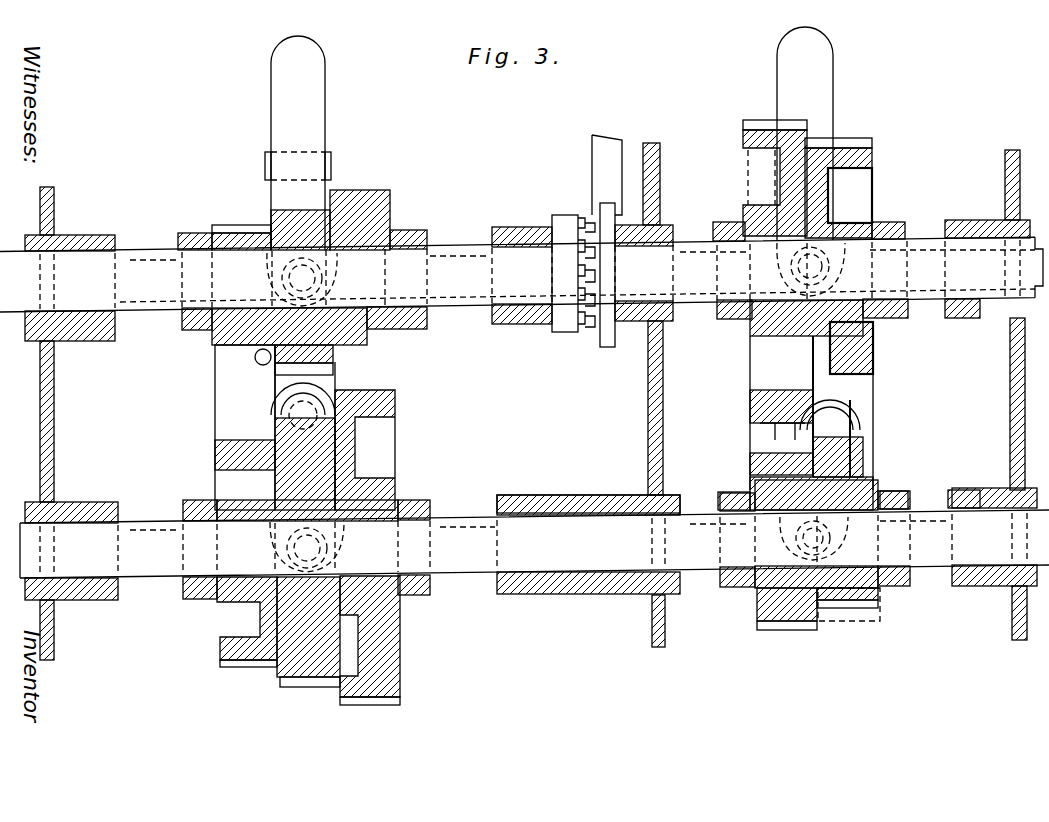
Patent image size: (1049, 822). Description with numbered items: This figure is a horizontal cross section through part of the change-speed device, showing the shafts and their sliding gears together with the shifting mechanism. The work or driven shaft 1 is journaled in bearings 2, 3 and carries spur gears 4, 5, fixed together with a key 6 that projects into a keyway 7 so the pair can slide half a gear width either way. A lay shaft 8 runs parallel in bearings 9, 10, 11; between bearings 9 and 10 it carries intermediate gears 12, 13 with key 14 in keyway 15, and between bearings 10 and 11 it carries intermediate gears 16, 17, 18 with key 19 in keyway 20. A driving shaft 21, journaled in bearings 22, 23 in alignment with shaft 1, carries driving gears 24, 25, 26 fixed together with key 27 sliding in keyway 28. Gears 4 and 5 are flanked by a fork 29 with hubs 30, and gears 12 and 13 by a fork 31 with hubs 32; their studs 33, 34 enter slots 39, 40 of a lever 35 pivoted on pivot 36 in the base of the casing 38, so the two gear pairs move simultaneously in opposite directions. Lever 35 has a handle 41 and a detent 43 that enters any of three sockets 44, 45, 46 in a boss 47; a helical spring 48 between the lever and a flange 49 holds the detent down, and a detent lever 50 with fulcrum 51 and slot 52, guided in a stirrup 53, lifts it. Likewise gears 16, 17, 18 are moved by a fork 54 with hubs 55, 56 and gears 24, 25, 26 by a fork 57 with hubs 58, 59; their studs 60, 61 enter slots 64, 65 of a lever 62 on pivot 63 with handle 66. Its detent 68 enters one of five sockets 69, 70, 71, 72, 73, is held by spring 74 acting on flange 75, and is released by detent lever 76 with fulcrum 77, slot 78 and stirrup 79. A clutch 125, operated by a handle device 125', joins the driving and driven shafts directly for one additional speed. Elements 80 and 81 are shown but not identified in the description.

The work or driven shaft 1 is at (918, 238).
The bearing 2 is at (980, 318).
The bearing 3 is at (662, 330).
The spur gear 4 is at (850, 152).
The spur gear 5 is at (760, 128).
The key 6 is at (860, 238).
The keyway 7 is at (890, 240).
The lay shaft 8 is at (550, 545).
The bearing 9 is at (980, 586).
The bearing 10 is at (563, 572).
The bearing 11 is at (75, 600).
The intermediate gear 12 is at (855, 608).
The intermediate gear 13 is at (785, 620).
The key 14 is at (870, 495).
The keyway 15 is at (905, 510).
The intermediate gear 16 is at (385, 678).
The intermediate gear 17 is at (298, 660).
The intermediate gear 18 is at (222, 648).
The key 19 is at (400, 502).
The keyway 20 is at (430, 520).
The driving shaft 21 is at (470, 245).
The bearing 22 is at (515, 324).
The bearing 23 is at (78, 341).
The driving gear 24 is at (372, 192).
The driving gear 25 is at (274, 213).
The driving gear 26 is at (212, 232).
The key 27 is at (398, 232).
The keyway 28 is at (440, 242).
The fork 29 is at (870, 345).
The hub 30 is at (730, 222).
The fork 31 is at (770, 590).
The hub 32 is at (730, 590).
The stud 33 is at (810, 238).
The stud 34 is at (810, 546).
The lever 35 is at (840, 440).
The pivot 36 is at (835, 415).
The casing 38 is at (40, 425).
The slot 39 is at (810, 263).
The slot 40 is at (818, 558).
The handle 41 is at (818, 80).
The detent 43 is at (828, 372).
The socket 44 is at (822, 360).
The socket 45 is at (825, 365).
The socket 46 is at (868, 345).
The boss 47 is at (820, 355).
The helical spring 48 is at (815, 350).
The flange 49 is at (748, 316).
The detent lever 50 is at (770, 435).
The fulcrum 51 is at (858, 455).
The slot 52 is at (762, 460).
The stirrup 53 is at (775, 150).
The fork 54 is at (240, 587).
The hub 55 is at (435, 500).
The hub 56 is at (183, 592).
The fork 57 is at (220, 345).
The hub 58 is at (412, 329).
The hub 59 is at (190, 330).
The stud 60 is at (262, 637).
The stud 61 is at (310, 272).
The lever 62 is at (262, 395).
The pivot 63 is at (270, 430).
The slot 64 is at (307, 548).
The slot 65 is at (305, 258).
The handle 66 is at (312, 105).
The detent 68 is at (335, 315).
The socket 69 is at (262, 345).
The socket 70 is at (290, 340).
The socket 71 is at (290, 395).
The socket 72 is at (300, 400).
The socket 73 is at (300, 408).
The helical spring 74 is at (345, 322).
The flange 75 is at (390, 320).
The detent lever 76 is at (255, 357).
The fulcrum 77 is at (385, 470).
The slot 78 is at (388, 347).
The stirrup 79 is at (265, 160).
The cap 80 is at (840, 365).
The plate 81 is at (225, 240).
The clutch 125 is at (581, 310).
The handle device 125' is at (578, 175).